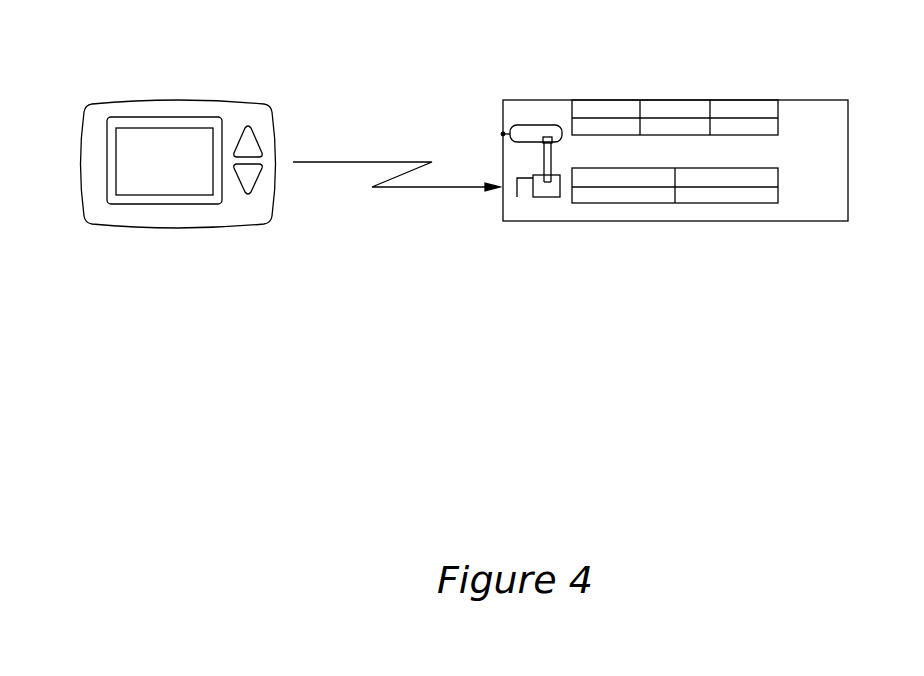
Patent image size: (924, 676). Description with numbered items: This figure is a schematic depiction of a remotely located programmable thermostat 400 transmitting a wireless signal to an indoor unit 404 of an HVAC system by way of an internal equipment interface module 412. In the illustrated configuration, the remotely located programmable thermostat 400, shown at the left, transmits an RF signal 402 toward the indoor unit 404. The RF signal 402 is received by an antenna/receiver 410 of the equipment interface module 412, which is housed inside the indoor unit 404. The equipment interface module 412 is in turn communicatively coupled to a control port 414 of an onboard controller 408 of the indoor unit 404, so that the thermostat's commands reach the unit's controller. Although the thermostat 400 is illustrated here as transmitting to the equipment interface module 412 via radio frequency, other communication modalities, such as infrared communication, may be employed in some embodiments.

The remotely located programmable thermostat 400 is at (176, 107).
The RF signal 402 is at (377, 162).
The indoor unit 404 is at (832, 110).
The onboard controller 408 is at (558, 130).
The antenna/receiver 410 is at (517, 192).
The equipment interface module 412 is at (548, 192).
The control port 414 is at (548, 137).